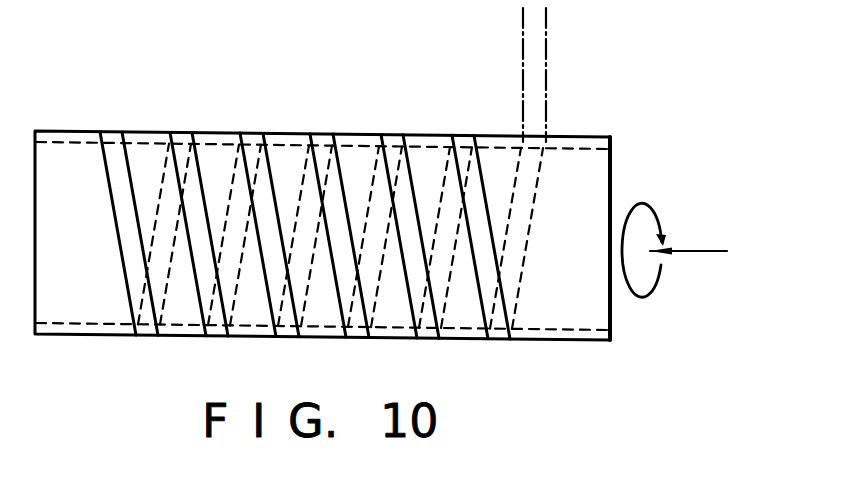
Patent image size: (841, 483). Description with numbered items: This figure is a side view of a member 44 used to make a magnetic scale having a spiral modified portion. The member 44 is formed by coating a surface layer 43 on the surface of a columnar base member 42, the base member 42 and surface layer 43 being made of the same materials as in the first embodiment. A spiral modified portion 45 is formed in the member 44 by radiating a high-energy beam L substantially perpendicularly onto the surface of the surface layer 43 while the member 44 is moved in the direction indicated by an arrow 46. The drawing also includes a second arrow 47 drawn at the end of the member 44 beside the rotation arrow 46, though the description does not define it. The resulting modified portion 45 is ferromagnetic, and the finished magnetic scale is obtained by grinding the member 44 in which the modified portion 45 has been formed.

The columnar base member 42 is at (612, 163).
The surface layer 43 is at (427, 134).
The member 44 is at (607, 122).
The spiral modified portion 45 is at (108, 131).
The arrow 46 is at (640, 205).
The feed direction arrow 47 is at (697, 253).
The high-energy beam L is at (548, 38).